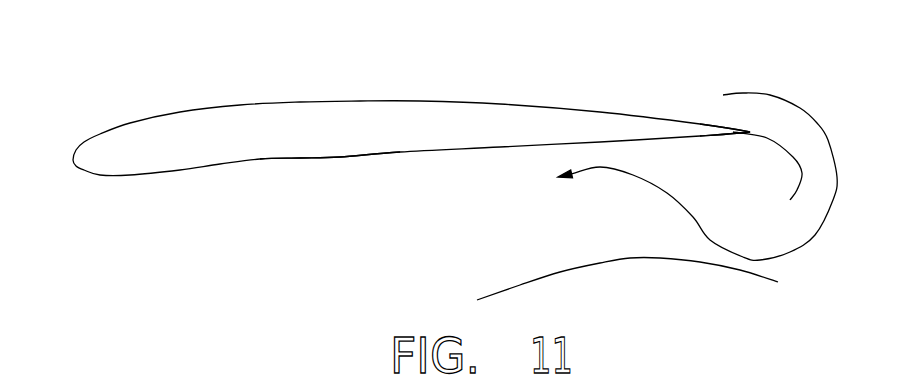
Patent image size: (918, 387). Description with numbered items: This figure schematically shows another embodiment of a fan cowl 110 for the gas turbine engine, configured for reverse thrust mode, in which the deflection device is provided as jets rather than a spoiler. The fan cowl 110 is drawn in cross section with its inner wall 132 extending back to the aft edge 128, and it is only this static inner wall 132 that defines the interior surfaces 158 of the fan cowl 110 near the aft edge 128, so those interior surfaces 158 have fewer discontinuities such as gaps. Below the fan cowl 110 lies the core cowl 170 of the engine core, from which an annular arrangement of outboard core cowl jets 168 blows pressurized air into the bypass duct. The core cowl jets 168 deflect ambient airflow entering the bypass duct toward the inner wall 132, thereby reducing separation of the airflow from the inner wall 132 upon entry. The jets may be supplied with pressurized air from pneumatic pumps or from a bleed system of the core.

The fan cowl 110 is at (135, 73).
The aft edge 128 is at (767, 174).
The inner wall 132 is at (673, 150).
The interior surfaces 158 is at (538, 273).
The core cowl jets 168 is at (561, 252).
The core cowl 170 is at (680, 260).